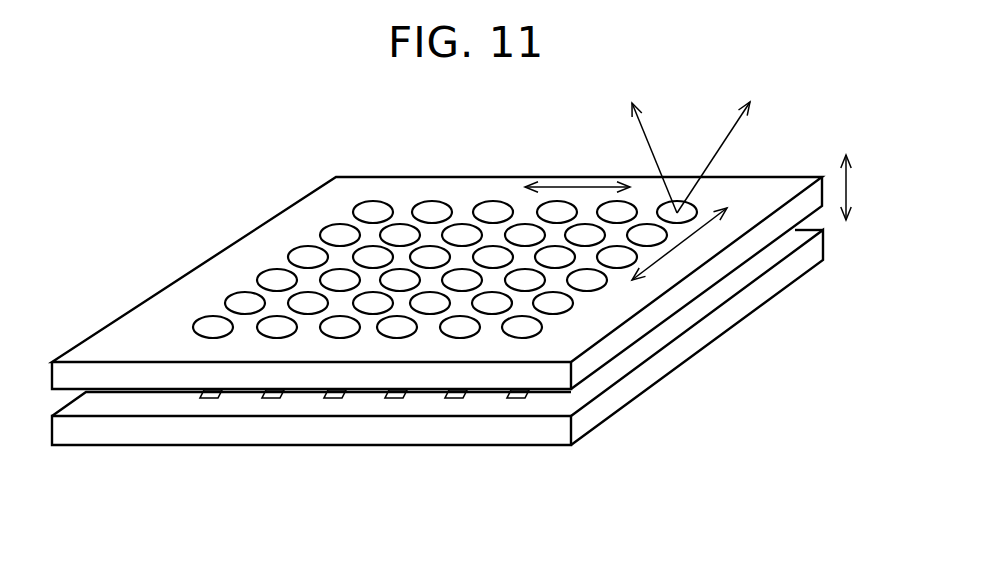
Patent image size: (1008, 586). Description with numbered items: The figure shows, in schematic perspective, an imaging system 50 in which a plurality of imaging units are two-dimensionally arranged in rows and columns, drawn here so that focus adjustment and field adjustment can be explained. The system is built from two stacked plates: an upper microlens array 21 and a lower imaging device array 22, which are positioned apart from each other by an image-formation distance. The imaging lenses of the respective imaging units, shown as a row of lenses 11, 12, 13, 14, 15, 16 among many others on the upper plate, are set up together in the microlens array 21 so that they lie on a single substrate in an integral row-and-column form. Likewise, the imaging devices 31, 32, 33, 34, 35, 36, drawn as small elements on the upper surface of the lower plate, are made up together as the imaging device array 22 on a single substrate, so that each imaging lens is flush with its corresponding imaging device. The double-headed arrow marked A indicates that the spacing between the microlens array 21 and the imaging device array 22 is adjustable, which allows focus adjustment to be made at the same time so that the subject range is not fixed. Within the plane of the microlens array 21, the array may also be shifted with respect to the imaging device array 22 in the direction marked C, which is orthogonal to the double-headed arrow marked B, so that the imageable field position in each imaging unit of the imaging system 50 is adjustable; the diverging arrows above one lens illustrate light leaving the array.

The imaging system 50 is at (353, 557).
The microlens array 21 is at (790, 177).
The imaging device array 22 is at (817, 248).
The imaging lens 11 is at (527, 328).
The imaging lens 12 is at (460, 327).
The imaging lens 13 is at (396, 327).
The imaging lens 14 is at (333, 327).
The imaging lens 15 is at (273, 325).
The imaging lens 16 is at (203, 328).
The imaging device 31 is at (518, 398).
The imaging device 32 is at (455, 398).
The imaging device 33 is at (393, 398).
The imaging device 34 is at (332, 398).
The imaging device 35 is at (270, 398).
The imaging device 36 is at (208, 398).